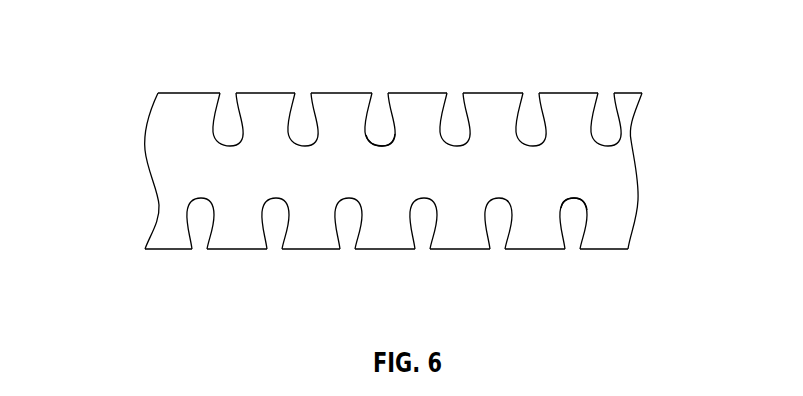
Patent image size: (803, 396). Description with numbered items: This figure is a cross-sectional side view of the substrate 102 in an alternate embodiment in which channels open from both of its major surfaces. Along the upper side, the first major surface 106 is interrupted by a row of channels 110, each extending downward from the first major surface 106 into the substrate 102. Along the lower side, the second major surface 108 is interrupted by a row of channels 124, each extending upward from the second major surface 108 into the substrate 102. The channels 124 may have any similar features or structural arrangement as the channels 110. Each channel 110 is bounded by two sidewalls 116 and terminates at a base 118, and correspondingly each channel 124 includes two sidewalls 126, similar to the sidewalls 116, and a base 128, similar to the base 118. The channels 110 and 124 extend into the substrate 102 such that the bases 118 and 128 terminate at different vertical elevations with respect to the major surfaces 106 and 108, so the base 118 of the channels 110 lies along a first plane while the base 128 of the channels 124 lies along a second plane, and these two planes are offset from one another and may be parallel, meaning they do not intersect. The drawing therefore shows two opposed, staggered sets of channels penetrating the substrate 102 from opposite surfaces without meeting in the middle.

The substrate 102 is at (157, 168).
The first major surface 106 is at (489, 88).
The second major surface 108 is at (456, 259).
The channel 110 is at (306, 104).
The sidewalls 116 is at (365, 113).
The base 118 is at (377, 148).
The channel 124 is at (348, 243).
The sidewalls 126 is at (560, 213).
The base 128 is at (572, 197).